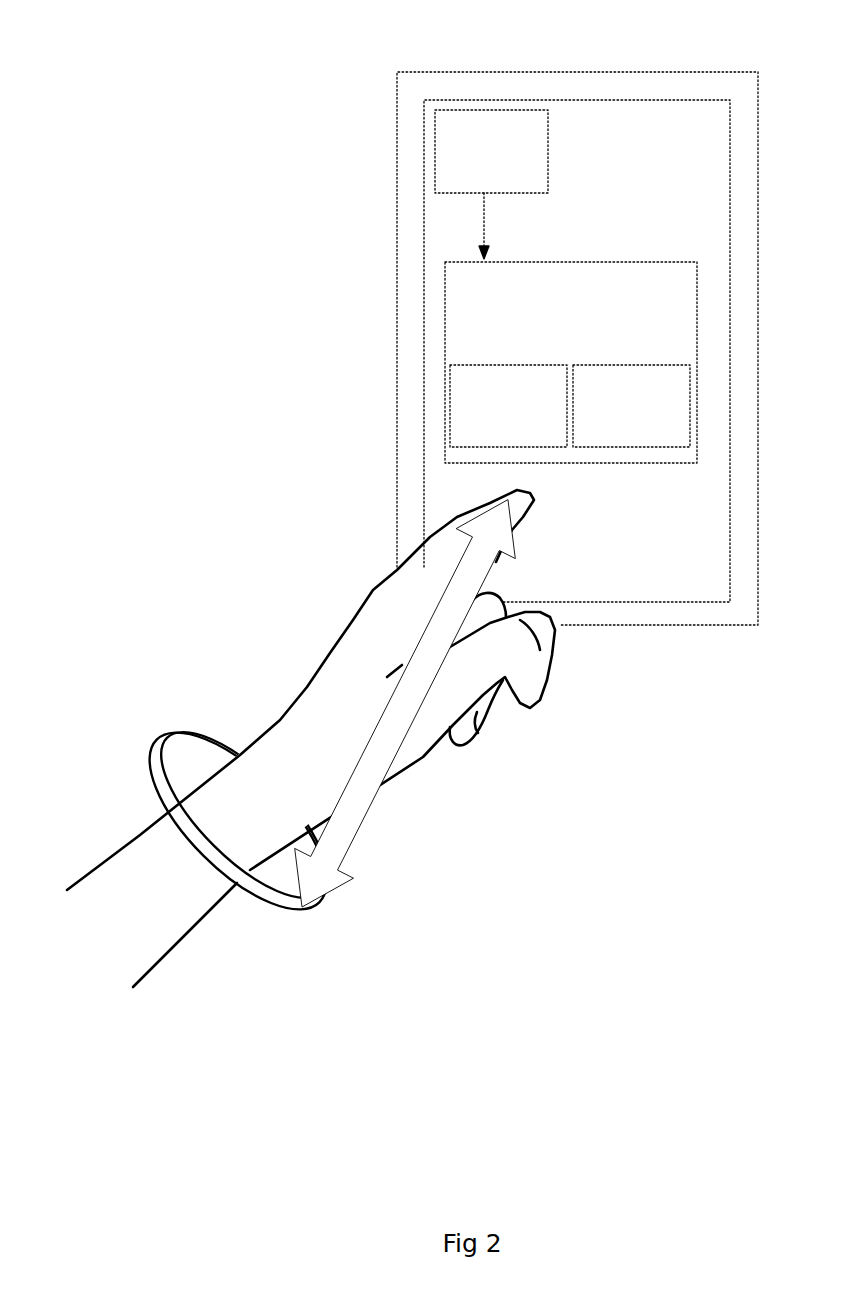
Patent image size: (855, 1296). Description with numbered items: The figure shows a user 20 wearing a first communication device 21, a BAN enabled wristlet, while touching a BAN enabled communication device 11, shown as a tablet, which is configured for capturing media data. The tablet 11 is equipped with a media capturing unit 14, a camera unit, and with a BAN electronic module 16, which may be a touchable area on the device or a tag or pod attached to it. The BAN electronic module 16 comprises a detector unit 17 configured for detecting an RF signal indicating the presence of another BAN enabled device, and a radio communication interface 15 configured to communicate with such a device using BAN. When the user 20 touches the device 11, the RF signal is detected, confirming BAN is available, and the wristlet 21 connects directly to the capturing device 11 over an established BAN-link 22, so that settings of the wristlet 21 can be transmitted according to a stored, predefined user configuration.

The BAN enabled communication device 11 is at (577, 327).
The media capturing unit 14 is at (491, 184).
The radio communication interface 15 is at (631, 406).
The BAN electronic module 16 is at (571, 362).
The detector unit 17 is at (508, 406).
The user 20 is at (311, 738).
The first communication device 21 is at (237, 818).
The BAN-link 22 is at (405, 703).